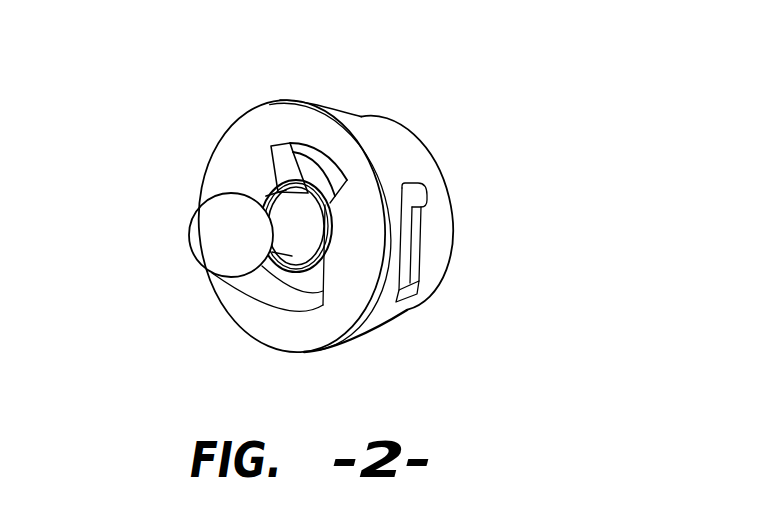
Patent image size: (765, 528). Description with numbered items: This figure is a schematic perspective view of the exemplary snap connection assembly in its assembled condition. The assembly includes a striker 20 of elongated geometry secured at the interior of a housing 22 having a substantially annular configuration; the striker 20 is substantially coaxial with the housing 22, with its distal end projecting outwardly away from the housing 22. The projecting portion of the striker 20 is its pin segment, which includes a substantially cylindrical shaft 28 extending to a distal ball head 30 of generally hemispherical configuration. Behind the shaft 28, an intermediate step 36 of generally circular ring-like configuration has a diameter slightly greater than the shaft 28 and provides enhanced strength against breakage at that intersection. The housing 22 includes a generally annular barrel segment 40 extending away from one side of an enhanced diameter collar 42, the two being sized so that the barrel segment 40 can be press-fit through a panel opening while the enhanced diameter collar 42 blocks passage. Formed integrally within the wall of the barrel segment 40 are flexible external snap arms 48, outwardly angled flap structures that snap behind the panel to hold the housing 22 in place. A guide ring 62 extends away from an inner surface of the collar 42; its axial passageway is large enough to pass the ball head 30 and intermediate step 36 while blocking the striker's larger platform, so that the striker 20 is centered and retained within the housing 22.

The striker 20 is at (298, 231).
The housing 22 is at (429, 138).
The shaft 28 is at (278, 203).
The ball head 30 is at (205, 228).
The intermediate step 36 is at (318, 150).
The barrel segment 40 is at (442, 283).
The enhanced diameter collar 42 is at (274, 102).
The external snap arms 48 is at (420, 238).
The guide ring 62 is at (351, 172).